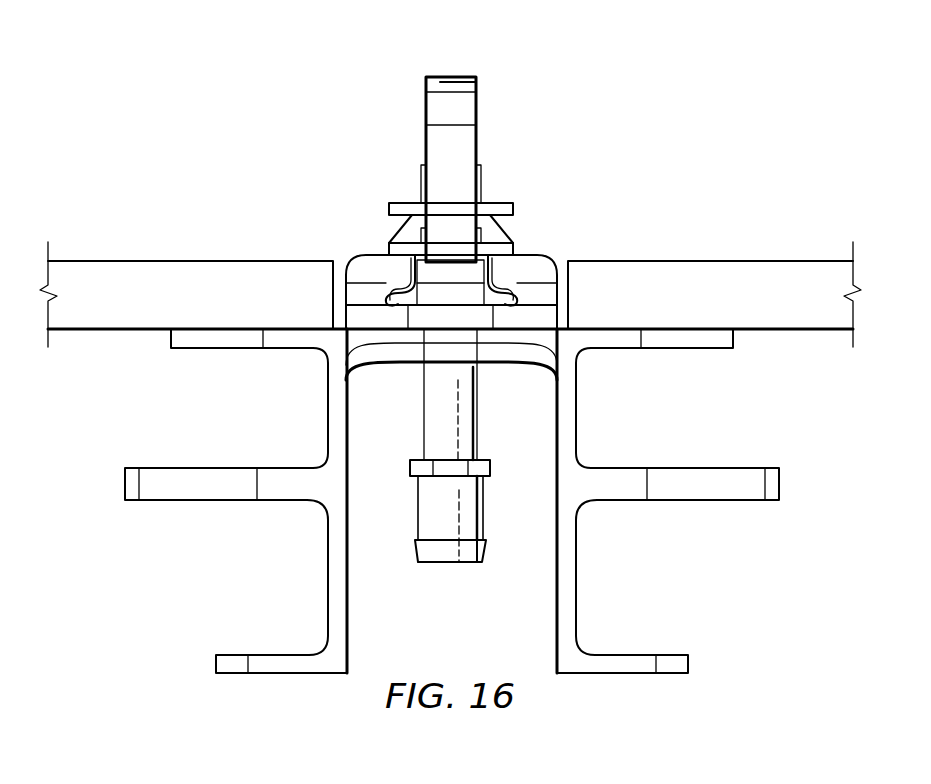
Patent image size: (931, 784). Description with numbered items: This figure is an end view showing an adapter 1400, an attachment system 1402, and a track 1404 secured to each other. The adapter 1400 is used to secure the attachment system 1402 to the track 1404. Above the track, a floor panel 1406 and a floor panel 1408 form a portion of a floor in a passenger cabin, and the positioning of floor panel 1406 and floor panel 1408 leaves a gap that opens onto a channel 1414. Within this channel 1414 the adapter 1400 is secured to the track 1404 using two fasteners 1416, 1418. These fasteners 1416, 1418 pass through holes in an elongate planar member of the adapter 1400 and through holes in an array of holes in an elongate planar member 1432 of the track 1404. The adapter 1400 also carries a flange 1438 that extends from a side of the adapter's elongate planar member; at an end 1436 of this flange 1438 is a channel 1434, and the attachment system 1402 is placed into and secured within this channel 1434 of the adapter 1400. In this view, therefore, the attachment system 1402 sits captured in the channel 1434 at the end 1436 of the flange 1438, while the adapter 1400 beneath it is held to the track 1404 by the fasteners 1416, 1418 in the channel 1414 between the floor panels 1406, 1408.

The adapter 1400 is at (487, 253).
The attachment system 1402 is at (450, 76).
The track 1404 is at (232, 355).
The floor panel 1406 is at (138, 260).
The floor panel 1408 is at (768, 260).
The channel 1414 is at (342, 250).
The fastener 1416 is at (432, 512).
The fastener 1418 is at (483, 517).
The elongate planar member 1432 is at (365, 328).
The channel 1434 is at (487, 286).
The end 1436 is at (536, 279).
The flange 1438 is at (550, 261).